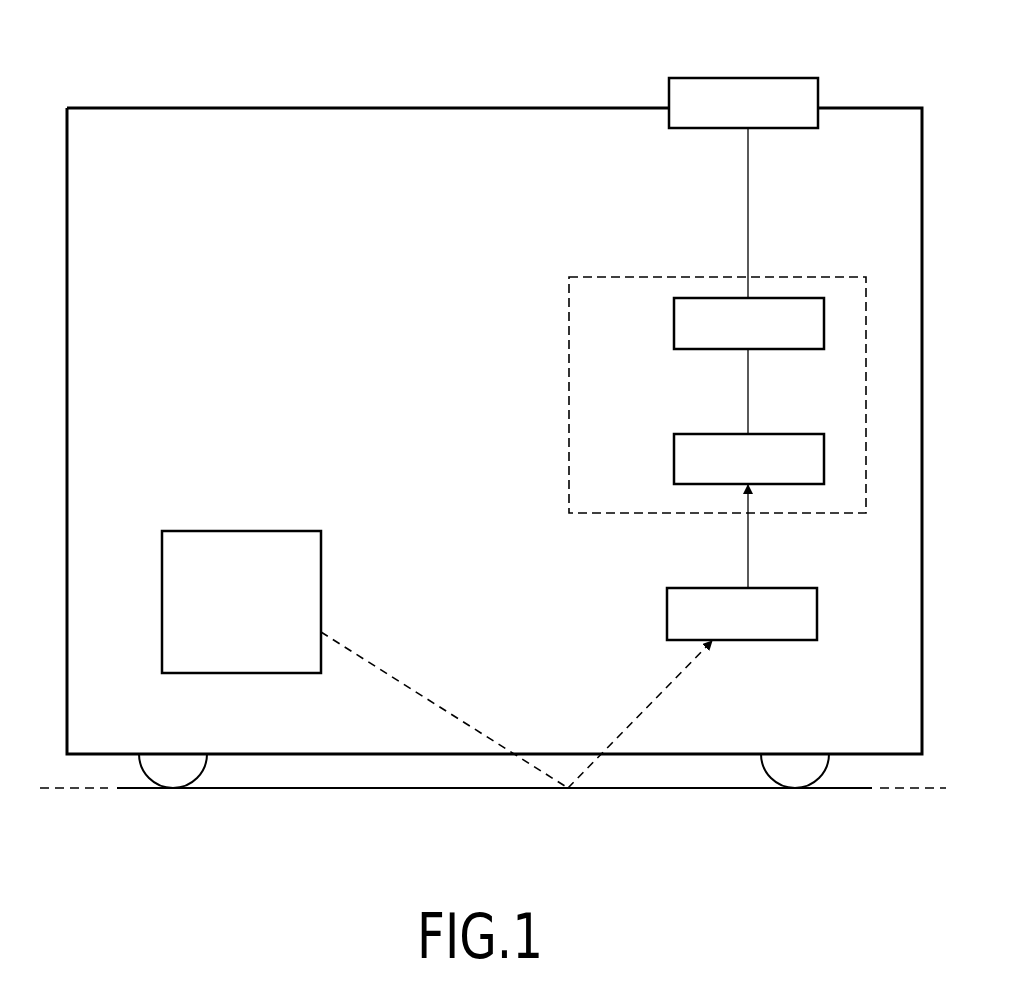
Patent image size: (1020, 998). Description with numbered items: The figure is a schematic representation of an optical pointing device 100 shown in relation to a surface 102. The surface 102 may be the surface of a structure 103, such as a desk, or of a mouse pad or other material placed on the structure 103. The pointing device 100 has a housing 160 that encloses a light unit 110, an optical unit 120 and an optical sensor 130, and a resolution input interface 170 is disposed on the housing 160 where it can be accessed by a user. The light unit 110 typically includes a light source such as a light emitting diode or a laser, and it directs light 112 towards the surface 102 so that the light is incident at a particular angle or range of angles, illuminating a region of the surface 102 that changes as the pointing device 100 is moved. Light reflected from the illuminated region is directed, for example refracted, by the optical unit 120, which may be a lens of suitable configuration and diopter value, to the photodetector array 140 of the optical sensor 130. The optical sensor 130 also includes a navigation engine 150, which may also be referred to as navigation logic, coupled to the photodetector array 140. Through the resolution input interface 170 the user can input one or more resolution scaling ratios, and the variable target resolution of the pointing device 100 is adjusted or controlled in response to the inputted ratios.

The optical pointing device 100 is at (363, 192).
The surface 102 is at (307, 786).
The structure 103 is at (769, 848).
The light unit 110 is at (264, 617).
The light 112 is at (399, 678).
The optical unit 120 is at (768, 632).
The optical sensor 130 is at (629, 335).
The photodetector array 140 is at (780, 478).
The navigation engine 150 is at (780, 343).
The housing 160 is at (514, 107).
The resolution input interface 170 is at (767, 122).